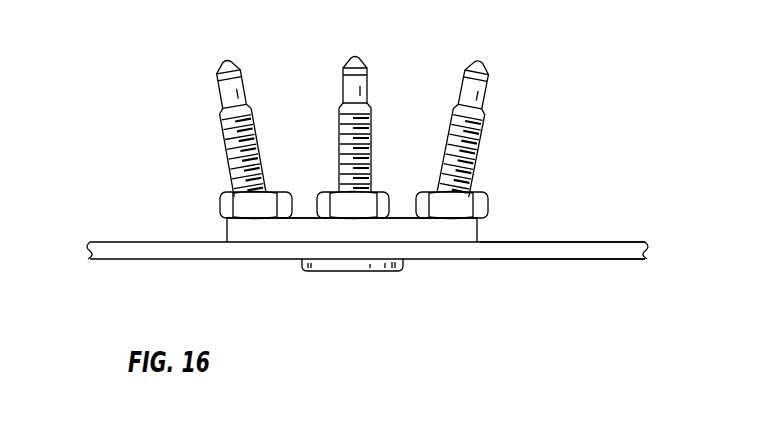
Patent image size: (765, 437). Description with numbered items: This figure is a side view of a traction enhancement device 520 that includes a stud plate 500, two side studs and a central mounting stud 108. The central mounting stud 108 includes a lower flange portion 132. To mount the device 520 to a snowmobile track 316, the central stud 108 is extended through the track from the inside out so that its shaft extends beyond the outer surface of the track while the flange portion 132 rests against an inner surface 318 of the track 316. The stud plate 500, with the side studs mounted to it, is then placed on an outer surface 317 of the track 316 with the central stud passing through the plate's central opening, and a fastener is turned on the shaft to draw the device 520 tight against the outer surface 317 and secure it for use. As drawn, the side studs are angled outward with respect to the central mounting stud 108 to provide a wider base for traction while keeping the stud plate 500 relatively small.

The traction enhancement device 520 is at (140, 97).
The central mounting stud 108 is at (343, 90).
The stud plate 500 is at (232, 232).
The lower flange portion 132 is at (341, 271).
The track 316 is at (612, 252).
The outer surface 317 is at (533, 242).
The inner surface 318 is at (562, 247).